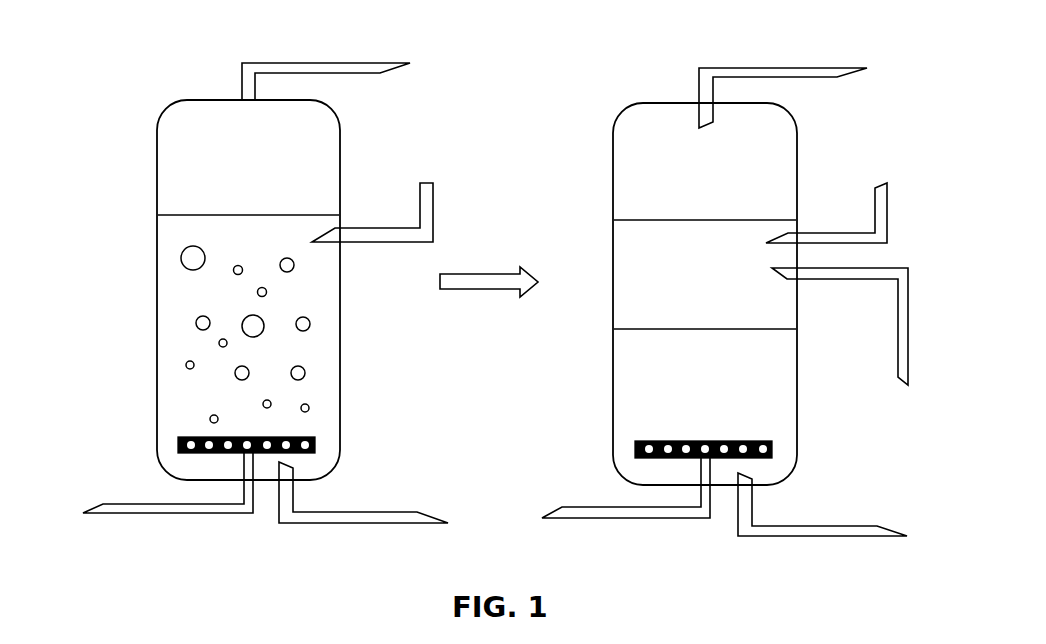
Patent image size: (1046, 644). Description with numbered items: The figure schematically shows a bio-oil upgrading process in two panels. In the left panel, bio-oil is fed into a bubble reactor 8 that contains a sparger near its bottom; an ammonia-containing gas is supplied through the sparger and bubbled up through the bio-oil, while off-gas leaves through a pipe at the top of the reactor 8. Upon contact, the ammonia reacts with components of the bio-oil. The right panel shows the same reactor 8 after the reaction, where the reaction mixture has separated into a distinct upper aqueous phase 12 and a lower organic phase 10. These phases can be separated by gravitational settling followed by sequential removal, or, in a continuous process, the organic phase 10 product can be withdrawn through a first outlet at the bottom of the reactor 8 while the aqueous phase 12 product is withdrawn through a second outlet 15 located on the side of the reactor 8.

The bubble reactor 8 is at (156, 382).
The organic phase 10 is at (636, 408).
The aqueous phase 12 is at (628, 258).
The second outlet 15 is at (908, 290).